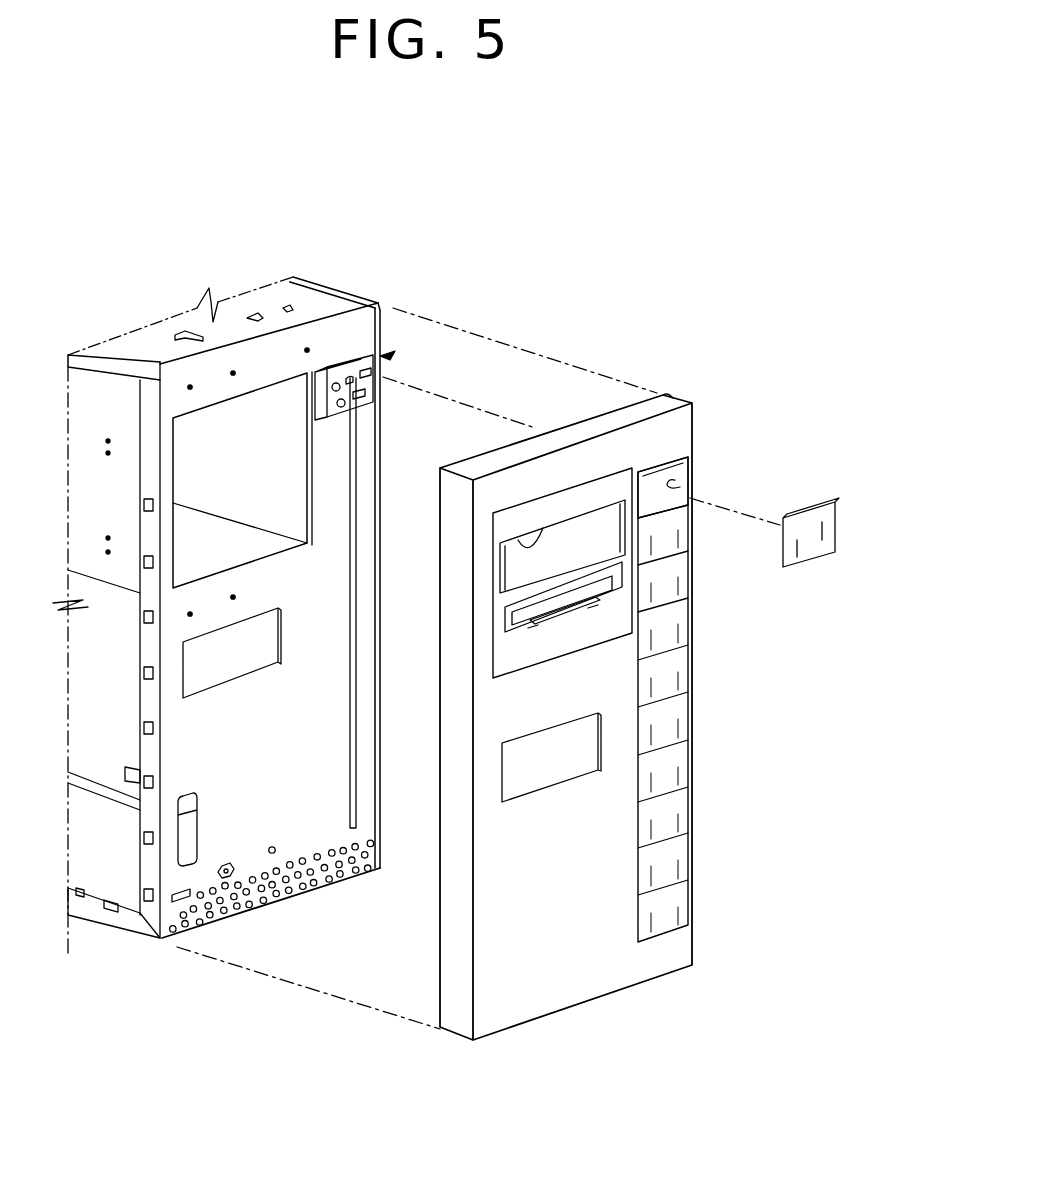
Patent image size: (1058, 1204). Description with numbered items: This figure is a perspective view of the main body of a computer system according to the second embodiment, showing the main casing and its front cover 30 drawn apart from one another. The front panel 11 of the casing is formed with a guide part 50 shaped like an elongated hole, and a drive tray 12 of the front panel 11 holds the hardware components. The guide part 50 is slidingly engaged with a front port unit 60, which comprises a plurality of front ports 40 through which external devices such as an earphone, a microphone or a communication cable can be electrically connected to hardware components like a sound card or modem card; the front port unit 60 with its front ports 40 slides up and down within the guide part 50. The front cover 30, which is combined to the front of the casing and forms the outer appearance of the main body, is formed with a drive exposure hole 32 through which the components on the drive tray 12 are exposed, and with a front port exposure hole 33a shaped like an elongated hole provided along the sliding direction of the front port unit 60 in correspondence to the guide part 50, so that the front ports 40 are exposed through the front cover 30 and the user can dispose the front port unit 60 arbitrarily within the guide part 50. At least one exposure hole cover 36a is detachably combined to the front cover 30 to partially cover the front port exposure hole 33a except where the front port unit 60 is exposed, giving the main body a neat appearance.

The front panel 11 is at (298, 852).
The drive tray 12 is at (287, 393).
The front cover 30 is at (660, 624).
The drive exposure hole 32 is at (540, 530).
The front port exposure hole 33a is at (693, 483).
The exposure hole cover 36a is at (822, 520).
The front port 40 is at (377, 395).
The guide part 50 is at (352, 810).
The front port unit 60 is at (395, 353).